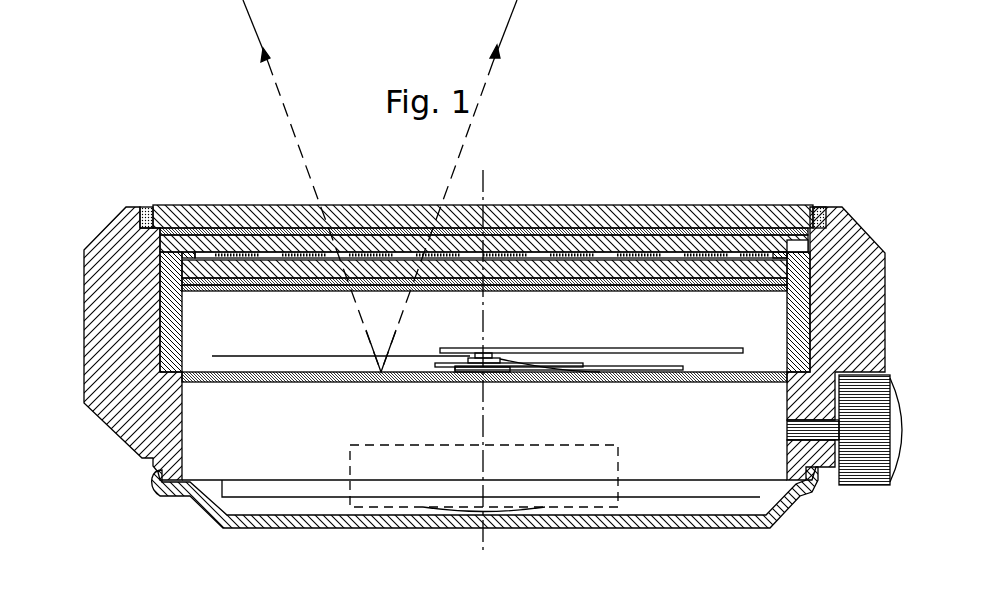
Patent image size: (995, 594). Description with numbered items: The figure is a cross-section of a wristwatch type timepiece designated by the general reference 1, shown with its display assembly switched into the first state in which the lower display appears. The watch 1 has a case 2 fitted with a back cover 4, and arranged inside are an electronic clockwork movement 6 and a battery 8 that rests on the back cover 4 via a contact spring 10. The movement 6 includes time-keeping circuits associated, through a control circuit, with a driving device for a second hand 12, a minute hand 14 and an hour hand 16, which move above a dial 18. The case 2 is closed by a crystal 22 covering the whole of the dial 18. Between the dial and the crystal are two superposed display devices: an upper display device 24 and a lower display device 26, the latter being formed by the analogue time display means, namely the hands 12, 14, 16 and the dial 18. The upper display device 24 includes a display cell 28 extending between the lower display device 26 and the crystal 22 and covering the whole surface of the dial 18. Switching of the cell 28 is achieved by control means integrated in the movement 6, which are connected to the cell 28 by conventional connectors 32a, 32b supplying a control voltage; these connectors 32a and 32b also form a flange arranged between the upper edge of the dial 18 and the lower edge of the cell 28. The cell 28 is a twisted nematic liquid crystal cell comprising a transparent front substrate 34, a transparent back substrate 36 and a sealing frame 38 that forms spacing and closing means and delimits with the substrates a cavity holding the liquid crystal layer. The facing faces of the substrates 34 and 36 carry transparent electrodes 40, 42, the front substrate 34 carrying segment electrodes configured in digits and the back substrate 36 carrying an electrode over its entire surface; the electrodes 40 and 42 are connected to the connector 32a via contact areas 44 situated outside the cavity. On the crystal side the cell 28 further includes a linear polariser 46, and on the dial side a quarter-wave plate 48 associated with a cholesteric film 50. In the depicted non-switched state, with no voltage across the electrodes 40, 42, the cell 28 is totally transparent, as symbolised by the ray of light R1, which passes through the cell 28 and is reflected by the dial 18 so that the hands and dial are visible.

The watch 1 is at (150, 182).
The case 2 is at (128, 356).
The back cover 4 is at (582, 522).
The electronic clockwork movement 6 is at (692, 455).
The battery 8 is at (380, 490).
The contact spring 10 is at (445, 512).
The second hand 12 is at (605, 353).
The minute hand 14 is at (580, 366).
The hour hand 16 is at (658, 372).
The dial 18 is at (700, 385).
The crystal 22 is at (548, 210).
The upper display device 24 is at (600, 146).
The lower display device 26 is at (713, 422).
The display cell 28 is at (228, 232).
The connector 32a is at (790, 334).
The connector 32b is at (182, 331).
The transparent front substrate 34 is at (585, 246).
The transparent back substrate 36 is at (745, 272).
The sealing frame 38 is at (822, 212).
The transparent electrode 40 is at (640, 256).
The transparent electrode 42 is at (700, 262).
The contact areas 44 is at (160, 272).
The linear polariser 46 is at (268, 250).
The quarter-wave plate 48 is at (612, 285).
The cholesteric film 50 is at (655, 291).
The ray of light R1 is at (380, 186).